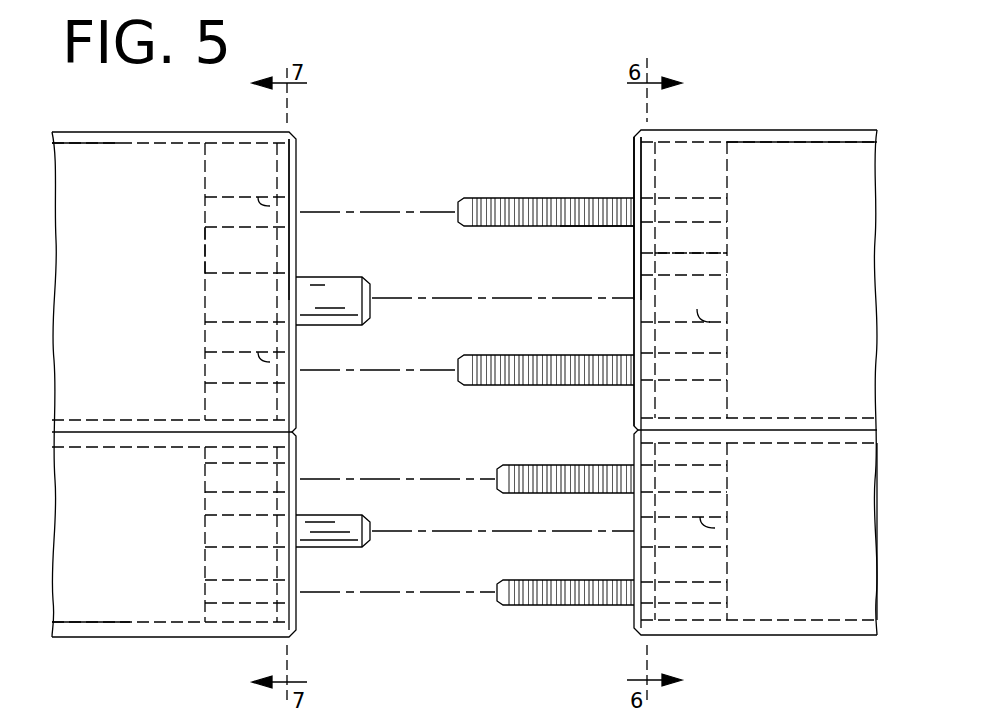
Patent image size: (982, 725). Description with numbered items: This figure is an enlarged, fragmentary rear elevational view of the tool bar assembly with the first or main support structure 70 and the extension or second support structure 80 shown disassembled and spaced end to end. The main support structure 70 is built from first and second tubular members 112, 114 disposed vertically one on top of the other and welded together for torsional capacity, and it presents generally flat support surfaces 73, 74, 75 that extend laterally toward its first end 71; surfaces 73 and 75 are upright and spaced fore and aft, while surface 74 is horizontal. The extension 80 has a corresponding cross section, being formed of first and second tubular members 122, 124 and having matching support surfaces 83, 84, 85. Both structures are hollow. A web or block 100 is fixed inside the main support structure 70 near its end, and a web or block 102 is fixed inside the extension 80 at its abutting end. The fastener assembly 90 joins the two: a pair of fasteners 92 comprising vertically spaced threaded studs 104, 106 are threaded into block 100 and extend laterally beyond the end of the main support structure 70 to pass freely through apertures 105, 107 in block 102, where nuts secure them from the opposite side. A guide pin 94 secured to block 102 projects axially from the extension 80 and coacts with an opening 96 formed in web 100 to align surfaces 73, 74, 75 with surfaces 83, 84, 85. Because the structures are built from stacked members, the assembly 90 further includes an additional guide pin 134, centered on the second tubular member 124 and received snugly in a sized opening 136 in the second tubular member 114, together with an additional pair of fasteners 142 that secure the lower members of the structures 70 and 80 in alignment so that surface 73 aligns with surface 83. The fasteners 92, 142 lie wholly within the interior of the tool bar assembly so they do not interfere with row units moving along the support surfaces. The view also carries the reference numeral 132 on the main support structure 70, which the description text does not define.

The main support structure 70 is at (775, 130).
The first end 71 is at (636, 162).
The support surface 73 is at (820, 156).
The support surface 74 is at (704, 130).
The support surface 75 is at (853, 530).
The extension support structure 80 is at (175, 128).
The support surface 83 is at (114, 175).
The support surface 84 is at (190, 132).
The support surface 85 is at (118, 610).
The fastener assembly 90 is at (516, 245).
The fasteners 92 is at (545, 198).
The guide pin 94 is at (337, 302).
The opening 96 is at (700, 322).
The web or block 100 is at (712, 251).
The web or block 102 is at (225, 247).
The threaded stud 104 is at (588, 232).
The aperture 105 is at (296, 205).
The threaded stud 106 is at (472, 386).
The aperture 107 is at (296, 368).
The first tubular member 112 is at (820, 353).
The second tubular member 114 is at (820, 573).
The first tubular member 122 is at (152, 318).
The second tubular member 124 is at (152, 533).
The mold block assembly 132 is at (688, 108).
The additional guide pin 134 is at (343, 530).
The sized opening 136 is at (733, 530).
The additional fasteners 142 is at (516, 465).